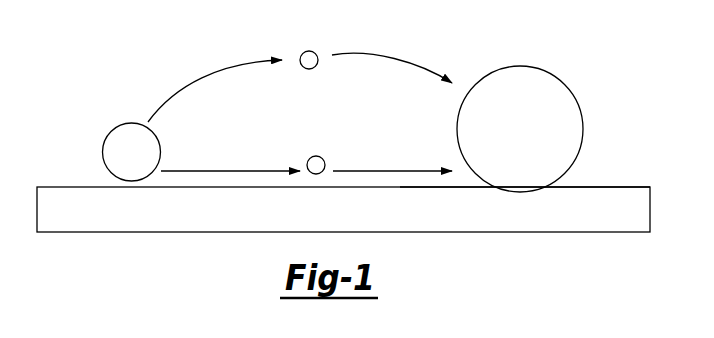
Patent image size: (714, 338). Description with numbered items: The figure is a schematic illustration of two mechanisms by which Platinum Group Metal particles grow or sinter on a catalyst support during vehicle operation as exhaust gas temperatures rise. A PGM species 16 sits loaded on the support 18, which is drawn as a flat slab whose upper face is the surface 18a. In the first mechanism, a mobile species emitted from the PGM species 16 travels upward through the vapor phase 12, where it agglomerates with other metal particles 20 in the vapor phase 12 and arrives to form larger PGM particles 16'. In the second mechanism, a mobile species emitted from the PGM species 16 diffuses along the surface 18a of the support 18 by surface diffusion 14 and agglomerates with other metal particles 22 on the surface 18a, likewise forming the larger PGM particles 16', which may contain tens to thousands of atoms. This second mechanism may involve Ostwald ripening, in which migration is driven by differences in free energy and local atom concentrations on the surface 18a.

The vapor phase 12 is at (301, 45).
The surface diffusion 14 is at (309, 152).
The PGM species 16 is at (112, 143).
The larger PGM particles 16' is at (550, 129).
The support 18 is at (62, 221).
The surface of the support 18a is at (621, 186).
The metal particles in the vapor phase 20 is at (310, 69).
The metal particles on the surface 22 is at (316, 165).